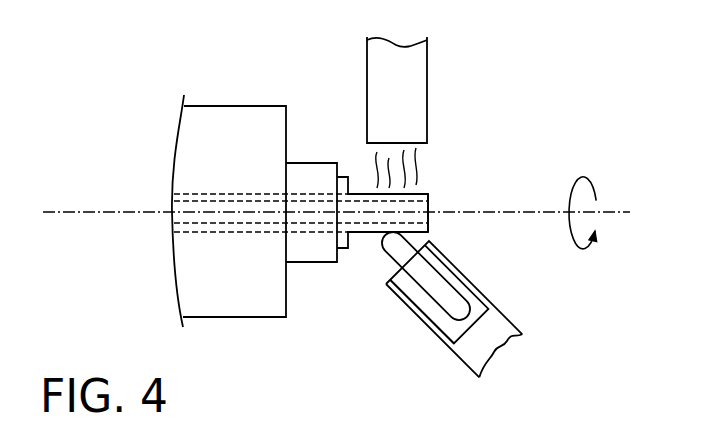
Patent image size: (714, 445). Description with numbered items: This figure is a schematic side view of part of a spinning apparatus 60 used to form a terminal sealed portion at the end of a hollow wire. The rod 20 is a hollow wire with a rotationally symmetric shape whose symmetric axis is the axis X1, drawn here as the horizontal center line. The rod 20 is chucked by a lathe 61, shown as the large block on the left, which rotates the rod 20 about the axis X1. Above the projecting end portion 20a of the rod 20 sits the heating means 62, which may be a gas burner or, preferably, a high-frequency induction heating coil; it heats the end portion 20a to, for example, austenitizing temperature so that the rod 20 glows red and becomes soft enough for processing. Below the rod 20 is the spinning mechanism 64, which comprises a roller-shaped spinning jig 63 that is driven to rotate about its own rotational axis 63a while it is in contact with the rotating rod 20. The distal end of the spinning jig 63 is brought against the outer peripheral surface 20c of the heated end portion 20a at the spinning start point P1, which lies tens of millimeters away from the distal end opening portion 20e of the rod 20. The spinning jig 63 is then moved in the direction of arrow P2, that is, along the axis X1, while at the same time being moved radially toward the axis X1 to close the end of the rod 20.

The rod 20 is at (363, 193).
The end portion 20a is at (397, 192).
The outer peripheral surface 20c is at (447, 245).
The distal end 20e is at (428, 198).
The spinning apparatus 60 is at (538, 95).
The lathe 61 is at (234, 106).
The heating means 62 is at (417, 93).
The spinning jig 63 is at (425, 292).
The rotational axis 63a is at (393, 300).
The spinning mechanism 64 is at (520, 305).
The spinning start point P1 is at (391, 236).
The arrow P2 direction P2 is at (458, 263).
The axis X1 is at (537, 212).